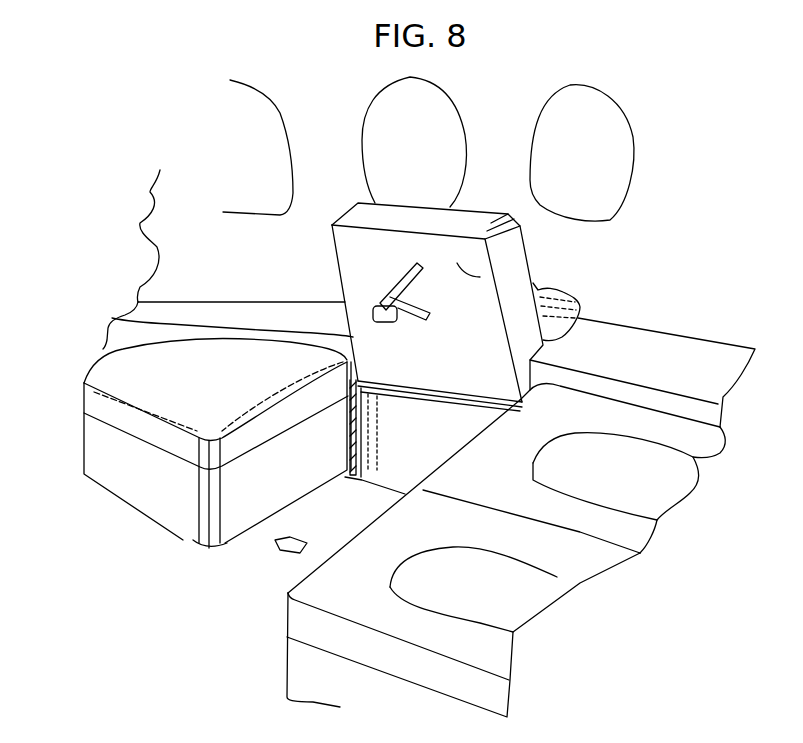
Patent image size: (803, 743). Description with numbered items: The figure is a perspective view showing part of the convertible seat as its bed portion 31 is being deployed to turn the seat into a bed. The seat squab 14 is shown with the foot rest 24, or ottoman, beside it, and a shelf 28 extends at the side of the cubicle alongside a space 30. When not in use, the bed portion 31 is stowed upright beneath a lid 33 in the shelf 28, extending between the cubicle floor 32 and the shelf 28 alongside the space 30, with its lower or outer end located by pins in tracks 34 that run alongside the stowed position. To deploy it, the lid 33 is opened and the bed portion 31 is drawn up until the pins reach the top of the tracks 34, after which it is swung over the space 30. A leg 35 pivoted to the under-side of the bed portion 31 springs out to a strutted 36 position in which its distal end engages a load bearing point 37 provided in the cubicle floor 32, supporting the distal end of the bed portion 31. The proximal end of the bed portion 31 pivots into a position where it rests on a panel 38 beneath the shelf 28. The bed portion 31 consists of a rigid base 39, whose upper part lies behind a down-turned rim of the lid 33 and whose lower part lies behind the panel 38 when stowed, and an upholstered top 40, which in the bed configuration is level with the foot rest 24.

The seat squab 14 is at (567, 418).
The foot rest 24 is at (143, 373).
The shelf 28 is at (693, 360).
The space 30 is at (350, 515).
The bed portion 31 is at (533, 273).
The cubicle floor 32 is at (255, 565).
The lid 33 is at (580, 305).
The tracks 34 is at (347, 433).
The leg 35 is at (392, 290).
The strutted position 36 is at (417, 313).
The load bearing point 37 is at (290, 537).
The panel 38 is at (417, 407).
The rigid base 39 is at (470, 270).
The upholstered top 40 is at (483, 207).